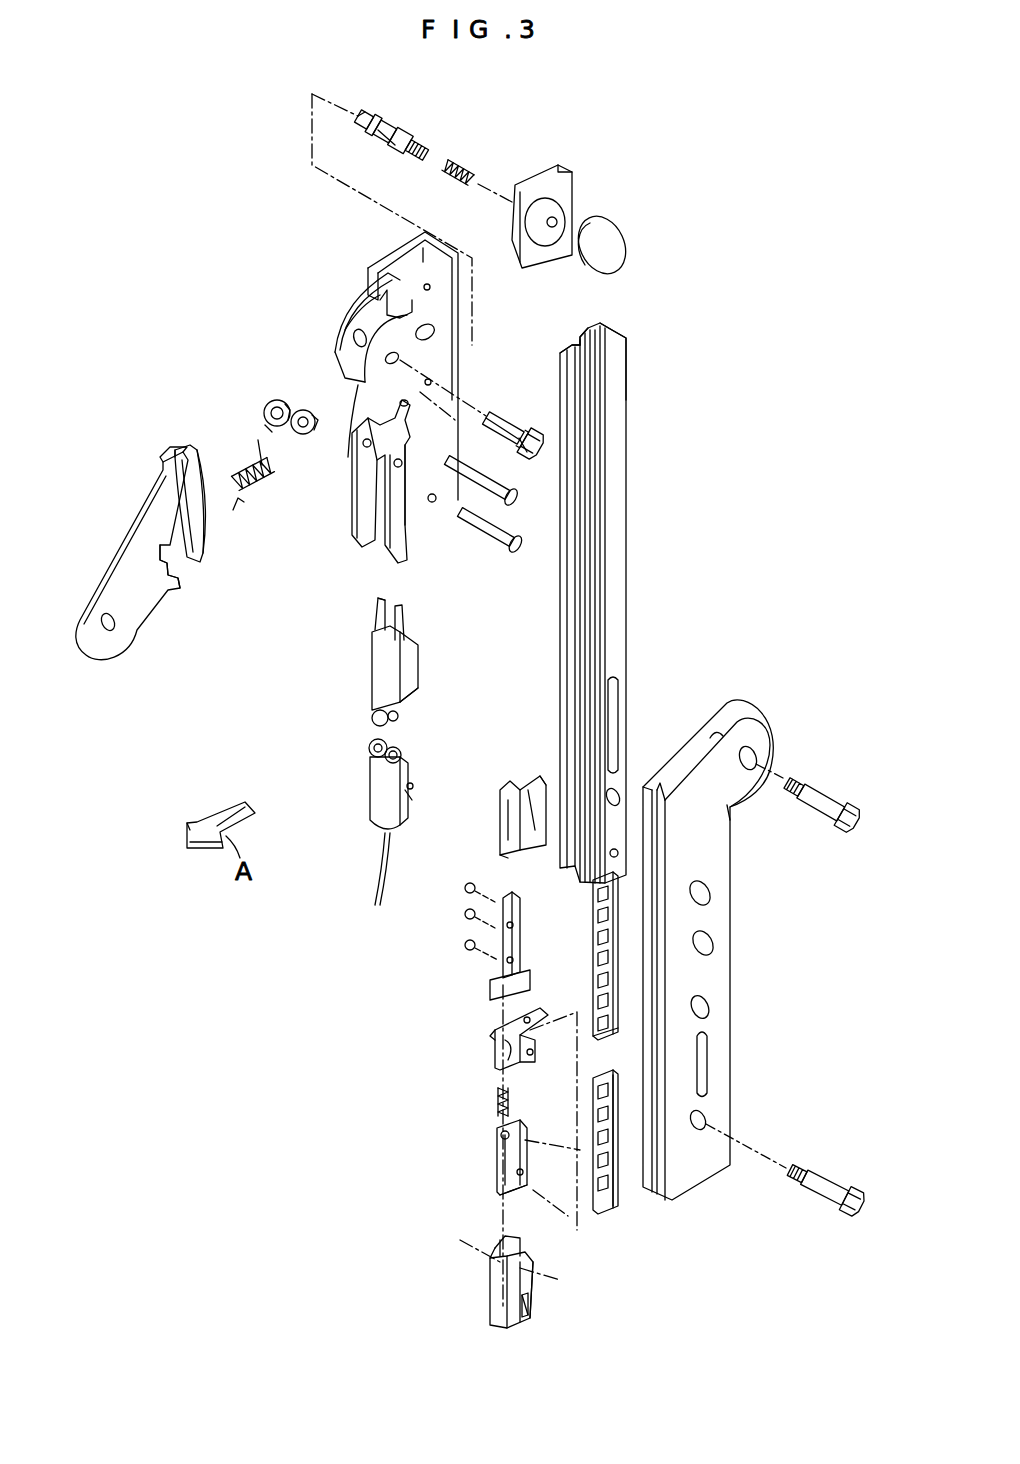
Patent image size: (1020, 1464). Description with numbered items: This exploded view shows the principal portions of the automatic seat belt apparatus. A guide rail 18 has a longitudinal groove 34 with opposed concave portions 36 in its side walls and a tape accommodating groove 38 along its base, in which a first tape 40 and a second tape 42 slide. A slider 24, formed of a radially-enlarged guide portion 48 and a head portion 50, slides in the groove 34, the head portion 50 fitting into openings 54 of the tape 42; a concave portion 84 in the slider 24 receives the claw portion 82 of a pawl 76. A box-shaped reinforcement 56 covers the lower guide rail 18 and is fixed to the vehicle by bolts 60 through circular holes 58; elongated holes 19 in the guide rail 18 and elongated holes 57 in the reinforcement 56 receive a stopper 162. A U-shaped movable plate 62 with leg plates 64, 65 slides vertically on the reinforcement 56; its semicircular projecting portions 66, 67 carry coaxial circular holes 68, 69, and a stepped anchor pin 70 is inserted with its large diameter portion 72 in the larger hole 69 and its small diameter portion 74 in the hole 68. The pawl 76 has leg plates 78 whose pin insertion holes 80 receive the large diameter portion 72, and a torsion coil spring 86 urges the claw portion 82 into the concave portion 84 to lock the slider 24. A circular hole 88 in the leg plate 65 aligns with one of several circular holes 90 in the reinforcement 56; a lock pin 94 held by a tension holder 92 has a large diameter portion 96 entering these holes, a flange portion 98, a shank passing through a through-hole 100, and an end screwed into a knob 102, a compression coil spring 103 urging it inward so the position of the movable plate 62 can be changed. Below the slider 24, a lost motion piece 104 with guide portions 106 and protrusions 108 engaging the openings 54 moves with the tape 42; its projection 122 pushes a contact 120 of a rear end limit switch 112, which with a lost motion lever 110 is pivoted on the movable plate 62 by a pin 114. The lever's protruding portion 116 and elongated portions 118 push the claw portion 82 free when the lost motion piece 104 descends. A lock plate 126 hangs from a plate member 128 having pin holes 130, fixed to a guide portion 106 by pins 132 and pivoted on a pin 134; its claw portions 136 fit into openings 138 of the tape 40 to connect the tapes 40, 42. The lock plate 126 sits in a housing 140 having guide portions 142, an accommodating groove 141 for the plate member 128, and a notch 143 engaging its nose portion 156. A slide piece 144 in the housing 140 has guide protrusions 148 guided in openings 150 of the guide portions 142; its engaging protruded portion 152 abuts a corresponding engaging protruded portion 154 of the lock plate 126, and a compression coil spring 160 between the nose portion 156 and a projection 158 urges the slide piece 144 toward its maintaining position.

The guide rail 18 is at (628, 580).
The elongated holes 19 is at (619, 700).
The slider 24 is at (132, 516).
The groove 34 is at (565, 355).
The concave portions 36 is at (585, 338).
The tape accommodating groove 38 is at (624, 342).
The tape 40 is at (618, 1205).
The tape 42 is at (592, 923).
The radially-enlarged guide portion 48 is at (207, 540).
The head portion 50 is at (200, 445).
The openings 54 is at (612, 975).
The reinforcement 56 is at (742, 1012).
The elongated holes 57 is at (708, 1073).
The circular holes 58 is at (752, 748).
The bolts 60 is at (823, 797).
The movable plate 62 is at (305, 335).
The leg plate 64 is at (380, 525).
The leg plate 65 is at (415, 505).
The projecting portion 66 is at (358, 322).
The projecting portion 67 is at (350, 432).
The circular hole 68 is at (345, 330).
The circular hole 69 is at (399, 358).
The stepped anchor pin 70 is at (548, 463).
The large diameter portion 72 is at (540, 440).
The small diameter portion 74 is at (500, 418).
The pawl 76 is at (280, 490).
The leg plates 78 is at (265, 405).
The pin insertion holes 80 is at (278, 400).
The claw portion 82 is at (312, 412).
The concave portion 84 is at (172, 590).
The torsion coil spring 86 is at (242, 455).
The circular hole 88 is at (422, 325).
The circular holes 90 is at (706, 882).
The tension holder 92 is at (576, 170).
The lock pin 94 is at (420, 125).
The large diameter portion 96 is at (362, 112).
The flange portion 98 is at (385, 140).
The through-hole 100 is at (556, 222).
The knob 102 is at (615, 225).
The compression coil spring 103 is at (460, 162).
The lost motion piece 104 is at (520, 770).
The guide portions 106 is at (500, 815).
The protrusions 108 is at (545, 778).
The lost motion lever 110 is at (372, 672).
The rear end limit switch 112 is at (368, 787).
The pin 114 is at (508, 493).
The protruding portion 116 is at (416, 660).
The elongated portions 118 is at (380, 615).
The contact 120 is at (410, 800).
The projection 122 is at (412, 788).
The lock plate 126 is at (480, 1036).
The plate member 128 is at (465, 916).
The pin holes 130 is at (538, 892).
The pins 132 is at (465, 890).
The pin 134 is at (466, 948).
The claw portions 136 is at (530, 1060).
The openings 138 is at (618, 1120).
The housing 140 is at (478, 1308).
The accommodating groove 141 is at (500, 1240).
The guide portions 142 is at (532, 1285).
The notch 143 is at (495, 1262).
The slide piece 144 is at (470, 1165).
The guide protrusions 148 is at (527, 1203).
The openings 150 is at (530, 1312).
The engaging protruded portion 152 is at (498, 1145).
The corresponding engaging protruded portion 154 is at (510, 1060).
The nose portion 156 is at (495, 1020).
The projection 158 is at (500, 1130).
The compression coil spring 160 is at (496, 1100).
The stopper 162 is at (482, 535).